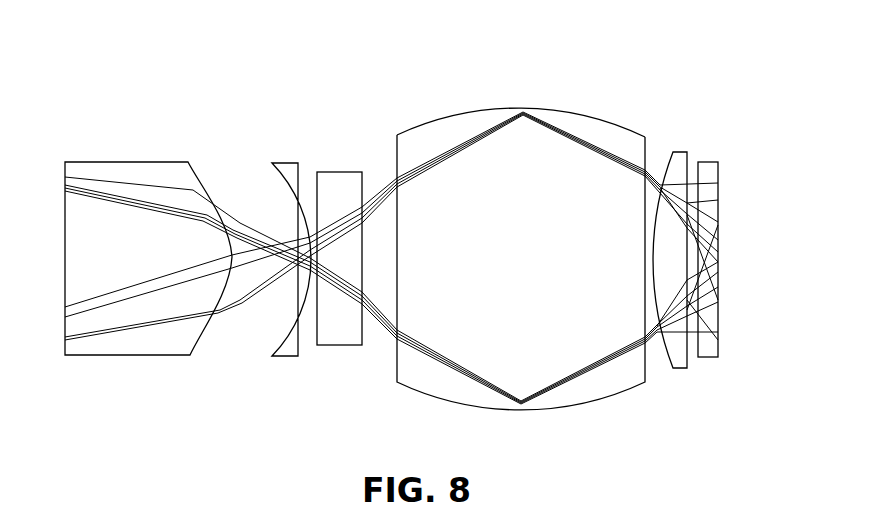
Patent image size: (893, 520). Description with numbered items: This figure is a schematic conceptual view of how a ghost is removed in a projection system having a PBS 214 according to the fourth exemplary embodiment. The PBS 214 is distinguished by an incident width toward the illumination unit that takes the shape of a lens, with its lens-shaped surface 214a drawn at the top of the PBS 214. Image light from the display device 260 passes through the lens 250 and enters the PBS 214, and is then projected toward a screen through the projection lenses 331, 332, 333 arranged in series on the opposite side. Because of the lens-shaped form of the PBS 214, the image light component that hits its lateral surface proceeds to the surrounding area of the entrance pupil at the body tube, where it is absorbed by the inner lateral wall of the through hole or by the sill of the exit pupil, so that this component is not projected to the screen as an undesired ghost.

The projection lens 333 is at (150, 177).
The projection lens 332 is at (291, 167).
The projection lens 331 is at (331, 177).
The PBS 214 is at (521, 212).
The reflective surface of prism 214a is at (470, 113).
The lens 250 is at (682, 155).
The display device 260 is at (712, 165).